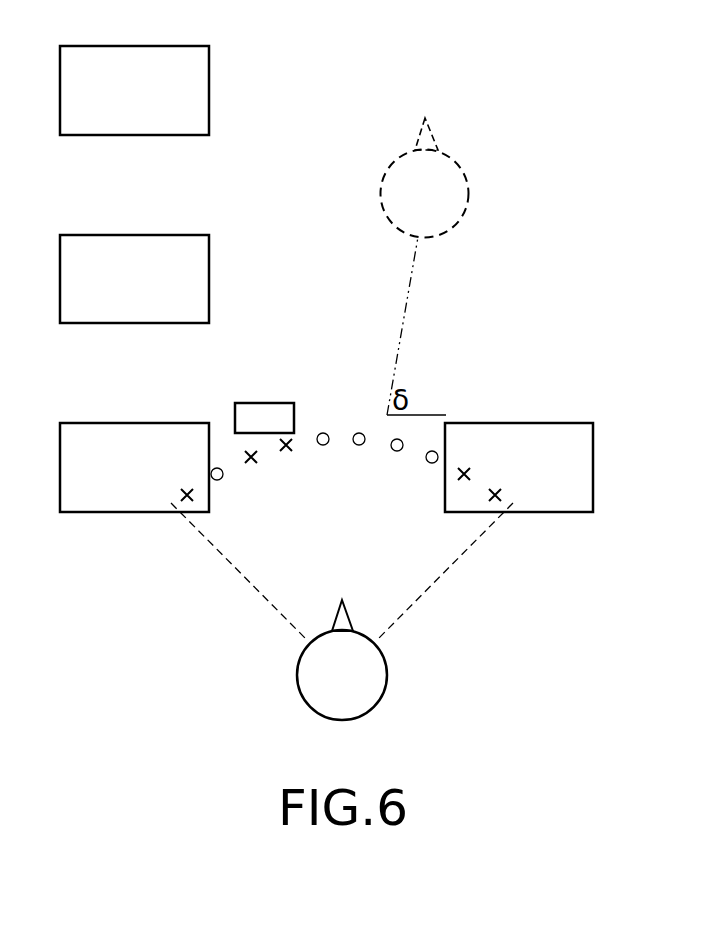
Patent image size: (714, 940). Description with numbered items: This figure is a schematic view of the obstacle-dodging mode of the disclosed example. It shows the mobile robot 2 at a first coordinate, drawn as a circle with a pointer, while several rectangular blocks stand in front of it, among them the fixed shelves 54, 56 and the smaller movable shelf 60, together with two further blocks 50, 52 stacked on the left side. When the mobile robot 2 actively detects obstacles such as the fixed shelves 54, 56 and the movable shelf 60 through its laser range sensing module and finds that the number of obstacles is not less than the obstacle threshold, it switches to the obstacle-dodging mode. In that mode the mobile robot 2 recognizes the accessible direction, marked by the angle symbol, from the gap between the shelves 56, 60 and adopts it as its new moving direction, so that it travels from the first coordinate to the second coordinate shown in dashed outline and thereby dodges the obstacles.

The mobile robot 2 is at (378, 673).
The first area / object 50 is at (135, 52).
The second area / object 52 is at (135, 241).
The fixed shelf 54 is at (135, 430).
The fixed shelf 56 is at (519, 430).
The movable shelf 60 is at (265, 410).